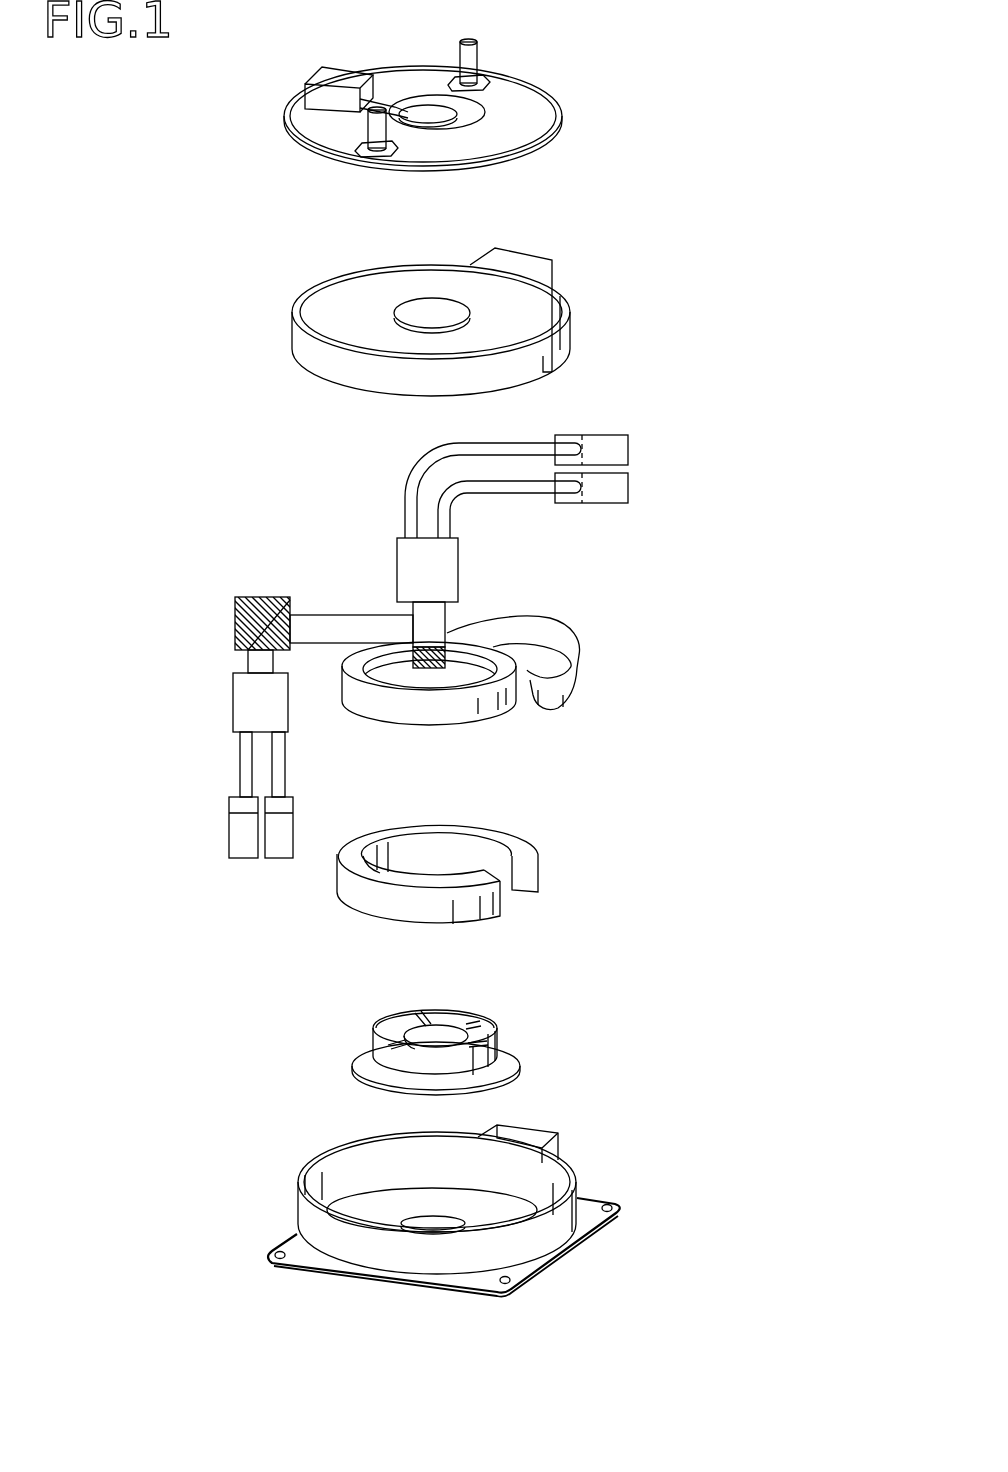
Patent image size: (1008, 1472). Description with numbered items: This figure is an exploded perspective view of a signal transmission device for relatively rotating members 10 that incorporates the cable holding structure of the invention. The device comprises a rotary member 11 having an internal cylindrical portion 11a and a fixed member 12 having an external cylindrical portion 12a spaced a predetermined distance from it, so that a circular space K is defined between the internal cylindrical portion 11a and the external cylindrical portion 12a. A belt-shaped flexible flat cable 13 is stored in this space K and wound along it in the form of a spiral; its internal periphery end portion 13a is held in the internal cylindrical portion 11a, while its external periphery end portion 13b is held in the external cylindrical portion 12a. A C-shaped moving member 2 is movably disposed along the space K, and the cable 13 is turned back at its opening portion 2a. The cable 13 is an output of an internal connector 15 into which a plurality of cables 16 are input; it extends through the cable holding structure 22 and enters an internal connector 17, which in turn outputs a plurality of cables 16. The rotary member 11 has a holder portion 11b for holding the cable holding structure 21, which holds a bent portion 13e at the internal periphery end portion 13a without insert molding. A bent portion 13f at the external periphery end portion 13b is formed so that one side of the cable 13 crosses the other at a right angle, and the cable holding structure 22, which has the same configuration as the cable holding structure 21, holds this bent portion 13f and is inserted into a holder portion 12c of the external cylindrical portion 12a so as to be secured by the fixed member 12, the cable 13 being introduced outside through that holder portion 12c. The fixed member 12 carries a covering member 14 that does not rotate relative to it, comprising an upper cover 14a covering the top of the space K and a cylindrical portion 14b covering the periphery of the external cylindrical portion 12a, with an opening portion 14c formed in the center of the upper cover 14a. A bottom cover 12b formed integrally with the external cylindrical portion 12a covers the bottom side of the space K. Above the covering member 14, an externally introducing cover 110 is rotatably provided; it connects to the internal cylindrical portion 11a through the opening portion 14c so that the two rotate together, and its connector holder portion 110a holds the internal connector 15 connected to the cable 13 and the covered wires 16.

The signal transmission device for relatively rotating members 10 is at (577, 225).
The externally introducing cover 110 is at (451, 85).
The connector holder portion 110a is at (337, 68).
The covering member 14 is at (487, 312).
The upper cover 14a is at (545, 302).
The cylindrical portion 14b is at (552, 367).
The opening portion 14c is at (436, 310).
The cable 13 is at (524, 673).
The internal periphery end portion 13a is at (452, 650).
The external periphery end portion 13b is at (322, 615).
The bent portion 13e is at (427, 670).
The bent portion 13f is at (253, 597).
The cable holding structure 21 is at (517, 642).
The cable holding structure 22 is at (245, 588).
The internal connector 15 is at (397, 550).
The cables 16 is at (405, 470).
The internal connector 17 is at (233, 705).
The C-shaped moving member 2 is at (490, 842).
The opening portion 2a is at (517, 903).
The rotary member 11 is at (504, 1022).
The internal cylindrical portion 11a is at (485, 1055).
The holder portion 11b is at (457, 1022).
The fixed member 12 is at (408, 1208).
The external cylindrical portion 12a is at (305, 1168).
The bottom cover 12b is at (377, 1208).
The holder portion 12c is at (528, 1127).
The circular space K is at (347, 1170).